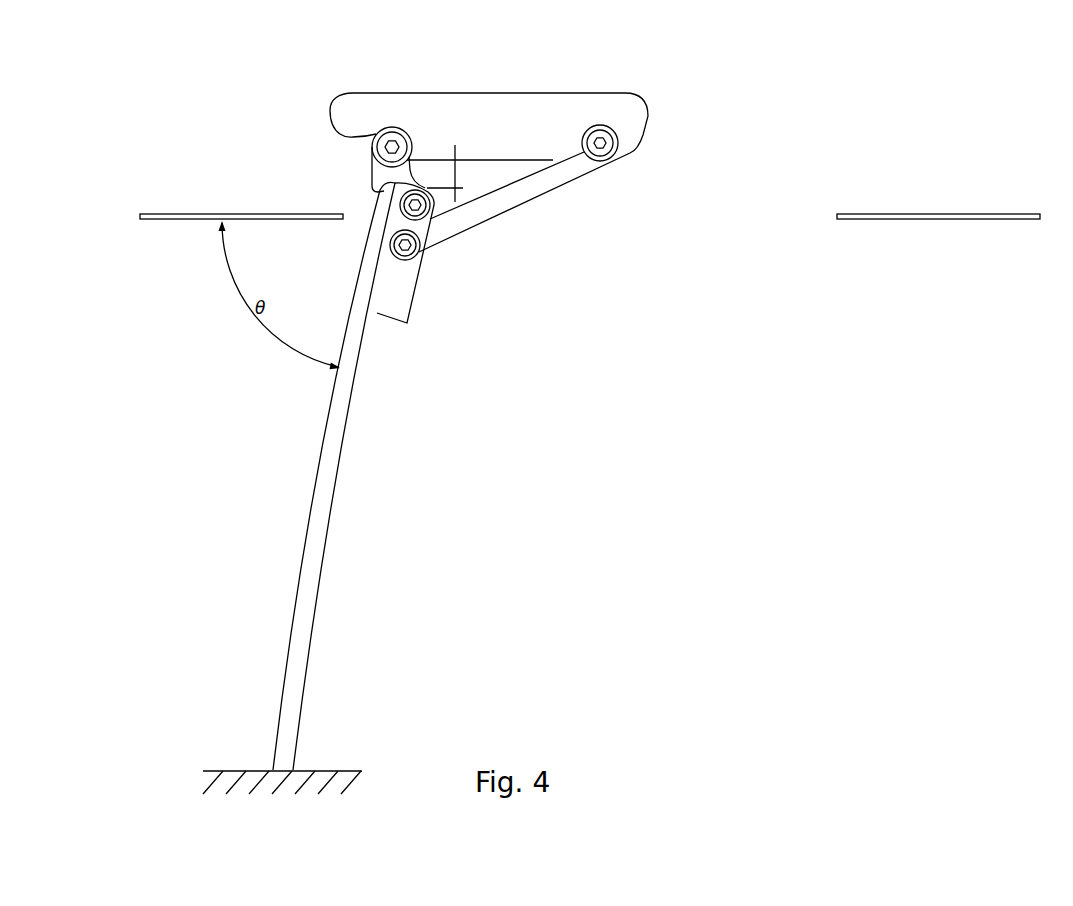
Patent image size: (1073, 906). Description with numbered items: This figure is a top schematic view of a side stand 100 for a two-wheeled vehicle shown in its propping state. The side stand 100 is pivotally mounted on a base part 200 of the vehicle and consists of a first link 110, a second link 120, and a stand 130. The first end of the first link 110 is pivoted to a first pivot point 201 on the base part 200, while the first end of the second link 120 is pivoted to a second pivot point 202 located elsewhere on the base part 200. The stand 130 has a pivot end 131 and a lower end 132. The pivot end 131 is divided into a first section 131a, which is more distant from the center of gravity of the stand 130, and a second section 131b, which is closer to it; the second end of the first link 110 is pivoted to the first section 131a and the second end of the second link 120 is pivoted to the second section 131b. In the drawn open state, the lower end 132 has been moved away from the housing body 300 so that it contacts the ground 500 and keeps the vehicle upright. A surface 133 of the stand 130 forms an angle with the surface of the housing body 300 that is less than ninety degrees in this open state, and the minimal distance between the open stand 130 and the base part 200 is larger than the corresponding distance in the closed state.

The side stand 100 is at (218, 83).
The first link 110 is at (350, 157).
The second link 120 is at (498, 234).
The stand 130 is at (368, 455).
The pivot end 131 is at (400, 297).
The first section 131a is at (363, 187).
The second section 131b is at (367, 252).
The lower end 132 is at (303, 633).
The surface 133 is at (293, 598).
The base part 200 is at (521, 91).
The first pivot point 201 is at (392, 126).
The second pivot point 202 is at (598, 125).
The housing body 300 is at (170, 215).
The ground 500 is at (327, 771).